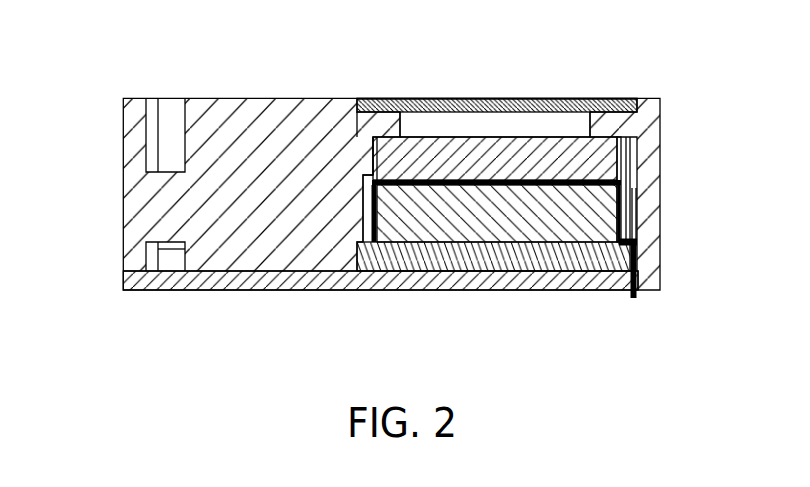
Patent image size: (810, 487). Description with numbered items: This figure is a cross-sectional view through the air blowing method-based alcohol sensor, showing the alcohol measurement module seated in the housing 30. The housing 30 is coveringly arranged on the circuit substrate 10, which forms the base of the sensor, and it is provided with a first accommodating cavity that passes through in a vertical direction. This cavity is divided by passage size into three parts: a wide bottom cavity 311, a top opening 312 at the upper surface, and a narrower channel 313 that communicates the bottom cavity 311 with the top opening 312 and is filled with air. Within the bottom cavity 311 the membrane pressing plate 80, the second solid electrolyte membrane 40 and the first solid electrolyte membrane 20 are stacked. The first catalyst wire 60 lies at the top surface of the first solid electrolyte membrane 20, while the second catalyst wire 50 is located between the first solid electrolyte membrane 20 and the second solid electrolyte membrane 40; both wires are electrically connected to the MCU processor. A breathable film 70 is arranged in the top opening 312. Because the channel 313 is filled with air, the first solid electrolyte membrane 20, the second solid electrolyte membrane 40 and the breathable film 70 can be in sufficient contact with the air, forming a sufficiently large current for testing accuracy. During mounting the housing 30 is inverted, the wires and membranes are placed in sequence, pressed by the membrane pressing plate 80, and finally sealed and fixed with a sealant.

The circuit substrate 10 is at (422, 283).
The first solid electrolyte membrane 20 is at (617, 110).
The housing 30 is at (173, 207).
The bottom cavity 311 is at (373, 177).
The top opening 312 is at (368, 172).
The channel 313 is at (443, 127).
The second solid electrolyte membrane 40 is at (614, 214).
The second catalyst wire 50 is at (587, 179).
The first catalyst wire 60 is at (497, 137).
The breathable film 70 is at (567, 100).
The membrane pressing plate 80 is at (603, 253).